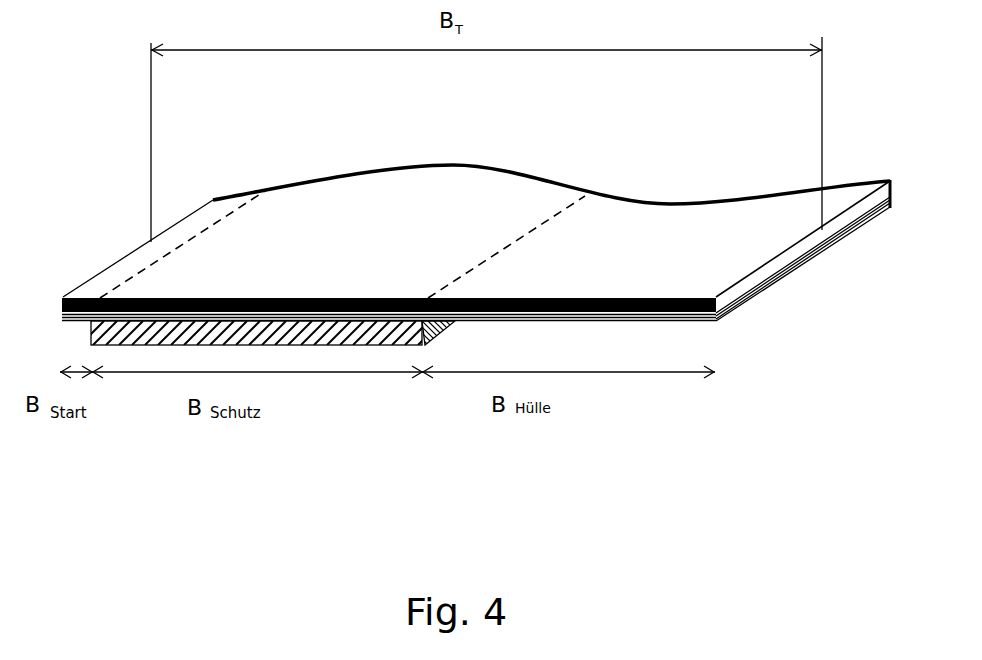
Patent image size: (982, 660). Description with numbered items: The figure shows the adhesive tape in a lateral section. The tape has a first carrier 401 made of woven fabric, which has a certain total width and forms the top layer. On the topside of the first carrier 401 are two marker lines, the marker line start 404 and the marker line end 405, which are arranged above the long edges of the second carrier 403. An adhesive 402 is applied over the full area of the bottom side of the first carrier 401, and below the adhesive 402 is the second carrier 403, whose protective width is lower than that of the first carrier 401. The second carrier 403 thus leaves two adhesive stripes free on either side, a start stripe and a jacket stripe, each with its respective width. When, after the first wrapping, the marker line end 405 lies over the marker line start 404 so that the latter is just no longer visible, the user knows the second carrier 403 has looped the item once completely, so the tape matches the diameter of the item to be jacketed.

The first carrier 401 is at (382, 192).
The adhesive 402 is at (685, 323).
The second carrier 403 is at (442, 340).
The marker line start 404 is at (222, 222).
The marker line end 405 is at (557, 215).